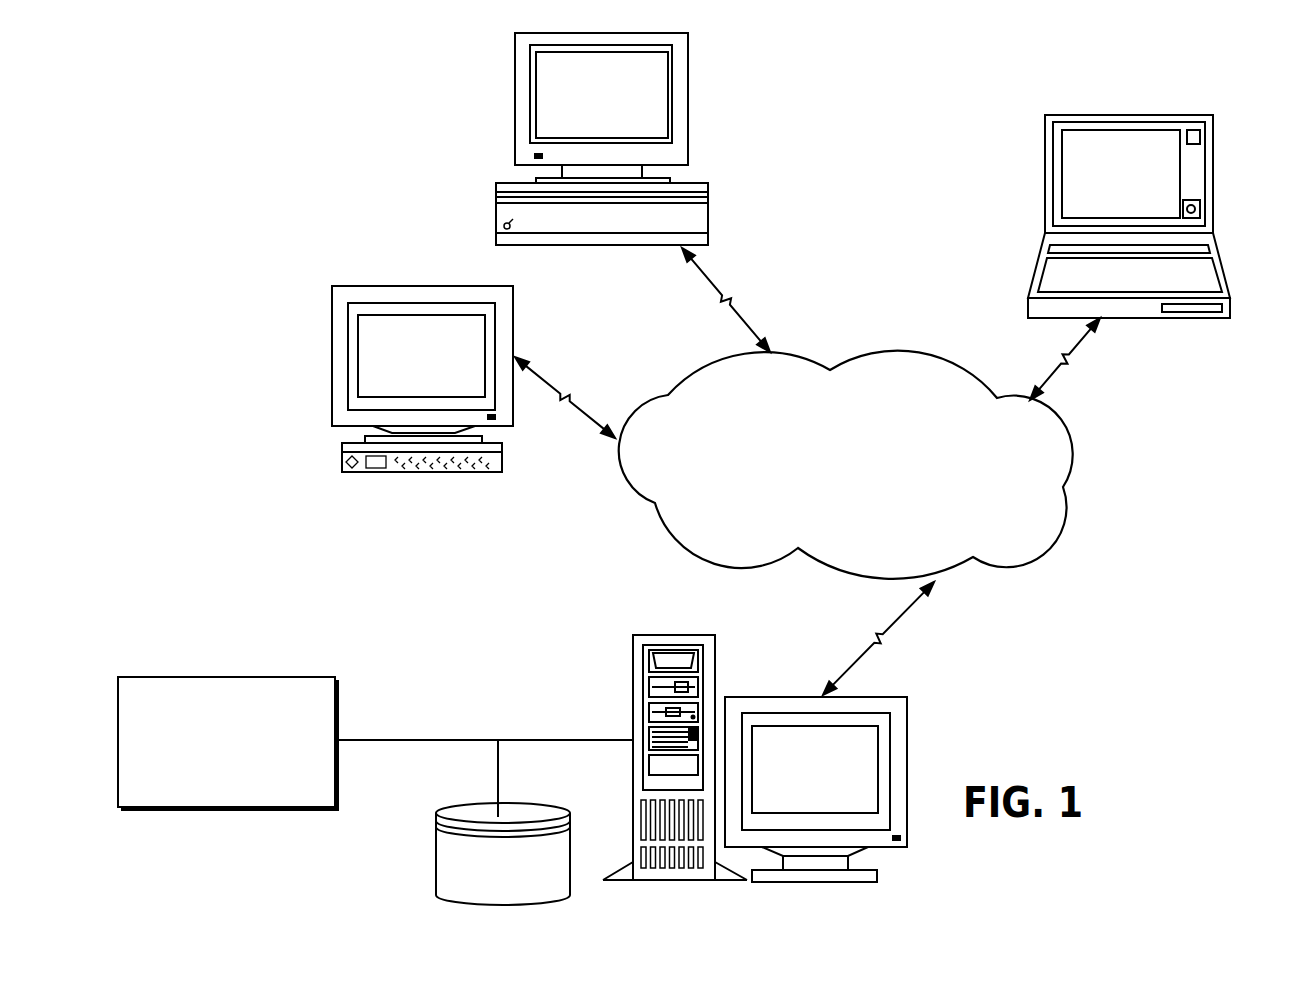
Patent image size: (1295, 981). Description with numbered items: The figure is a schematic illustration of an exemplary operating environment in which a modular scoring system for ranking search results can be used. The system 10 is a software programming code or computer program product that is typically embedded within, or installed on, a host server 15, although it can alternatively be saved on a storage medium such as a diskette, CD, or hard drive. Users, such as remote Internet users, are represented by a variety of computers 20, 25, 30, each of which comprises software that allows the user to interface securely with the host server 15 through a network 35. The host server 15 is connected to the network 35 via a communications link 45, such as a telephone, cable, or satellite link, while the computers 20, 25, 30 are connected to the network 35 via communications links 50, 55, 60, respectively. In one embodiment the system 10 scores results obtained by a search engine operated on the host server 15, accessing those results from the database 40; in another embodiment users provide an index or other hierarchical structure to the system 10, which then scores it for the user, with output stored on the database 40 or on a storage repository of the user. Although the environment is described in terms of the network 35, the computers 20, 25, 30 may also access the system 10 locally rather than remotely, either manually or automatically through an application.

The system 10 is at (118, 718).
The host server 15 is at (633, 680).
The computer 20 is at (513, 340).
The computer 25 is at (688, 85).
The computer 30 is at (1225, 265).
The network 35 is at (1060, 540).
The database 40 is at (436, 838).
The communications link 45 is at (870, 632).
The communications link 50 is at (567, 387).
The communications link 55 is at (730, 308).
The communications link 60 is at (1055, 372).